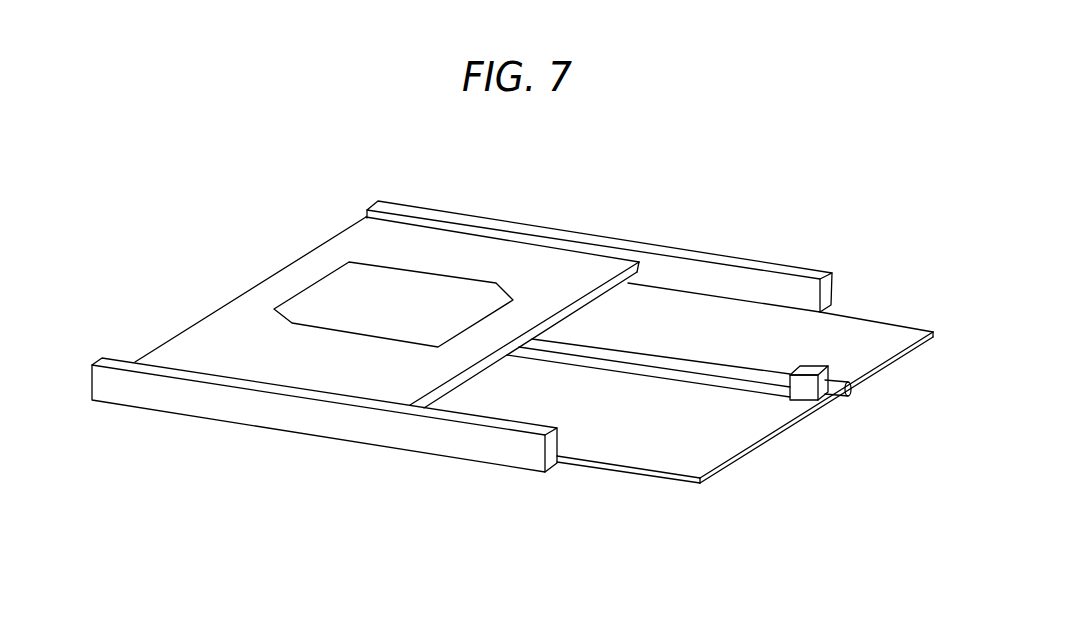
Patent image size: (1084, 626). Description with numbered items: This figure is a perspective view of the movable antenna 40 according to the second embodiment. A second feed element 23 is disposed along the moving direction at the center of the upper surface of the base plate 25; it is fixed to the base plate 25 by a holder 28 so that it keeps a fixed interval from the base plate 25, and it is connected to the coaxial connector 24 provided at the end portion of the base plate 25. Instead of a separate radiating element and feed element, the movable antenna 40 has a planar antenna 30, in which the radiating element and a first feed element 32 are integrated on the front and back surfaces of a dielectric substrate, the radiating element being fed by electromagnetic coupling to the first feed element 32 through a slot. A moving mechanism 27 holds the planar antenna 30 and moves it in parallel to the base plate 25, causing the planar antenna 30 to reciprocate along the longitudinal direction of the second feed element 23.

The movable antenna 40 is at (268, 470).
The planar antenna 30 is at (215, 323).
The moving mechanism 27 is at (528, 224).
The base plate 25 is at (890, 333).
The second feed element 23 is at (760, 377).
The first feed element 32 is at (531, 340).
The holder 28 is at (734, 395).
The coaxial connector 24 is at (837, 392).